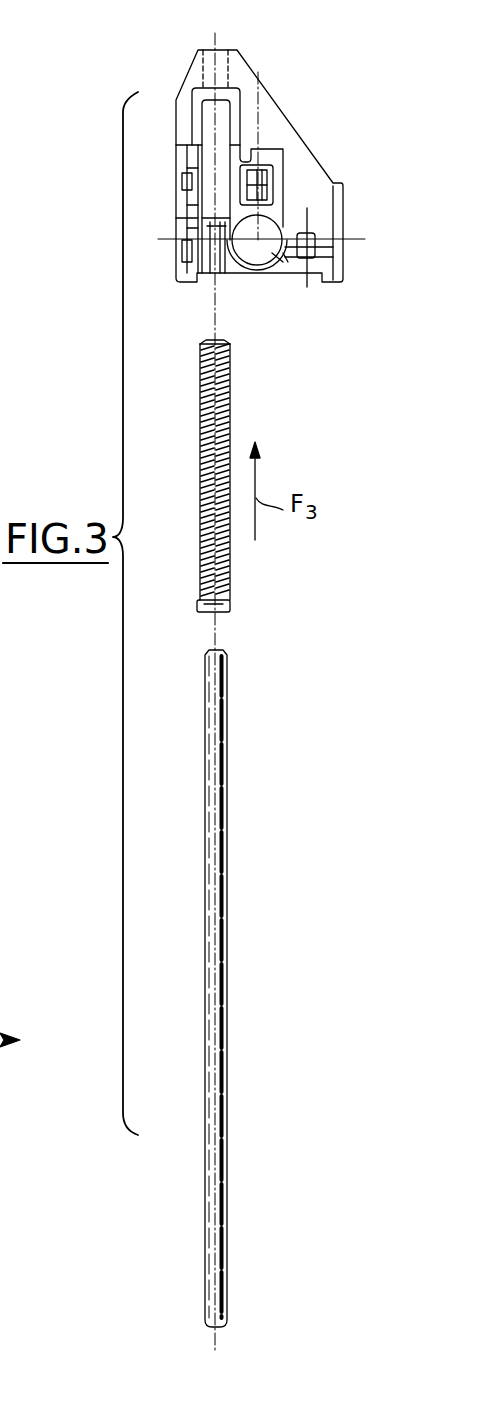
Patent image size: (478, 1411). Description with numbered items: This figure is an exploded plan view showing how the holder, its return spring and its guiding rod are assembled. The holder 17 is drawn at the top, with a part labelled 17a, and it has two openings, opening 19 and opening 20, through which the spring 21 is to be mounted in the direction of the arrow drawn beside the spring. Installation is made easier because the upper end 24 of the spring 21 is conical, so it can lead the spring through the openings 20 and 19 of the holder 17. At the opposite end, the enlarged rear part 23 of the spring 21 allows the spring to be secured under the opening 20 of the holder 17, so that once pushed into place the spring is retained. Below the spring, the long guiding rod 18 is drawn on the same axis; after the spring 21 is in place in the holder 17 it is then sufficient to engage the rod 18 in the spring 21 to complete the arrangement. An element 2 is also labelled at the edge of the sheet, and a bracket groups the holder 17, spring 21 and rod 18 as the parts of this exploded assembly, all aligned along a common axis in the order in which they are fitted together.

The hinge assembly 2 is at (11, 870).
The holder 17 is at (298, 181).
The fastening bolt 17a is at (283, 256).
The rod 18 is at (225, 810).
The opening 19 is at (232, 68).
The opening 20 is at (225, 278).
The spring 21 is at (222, 388).
The enlarged rear part 23 is at (229, 603).
The upper end 24 is at (212, 341).